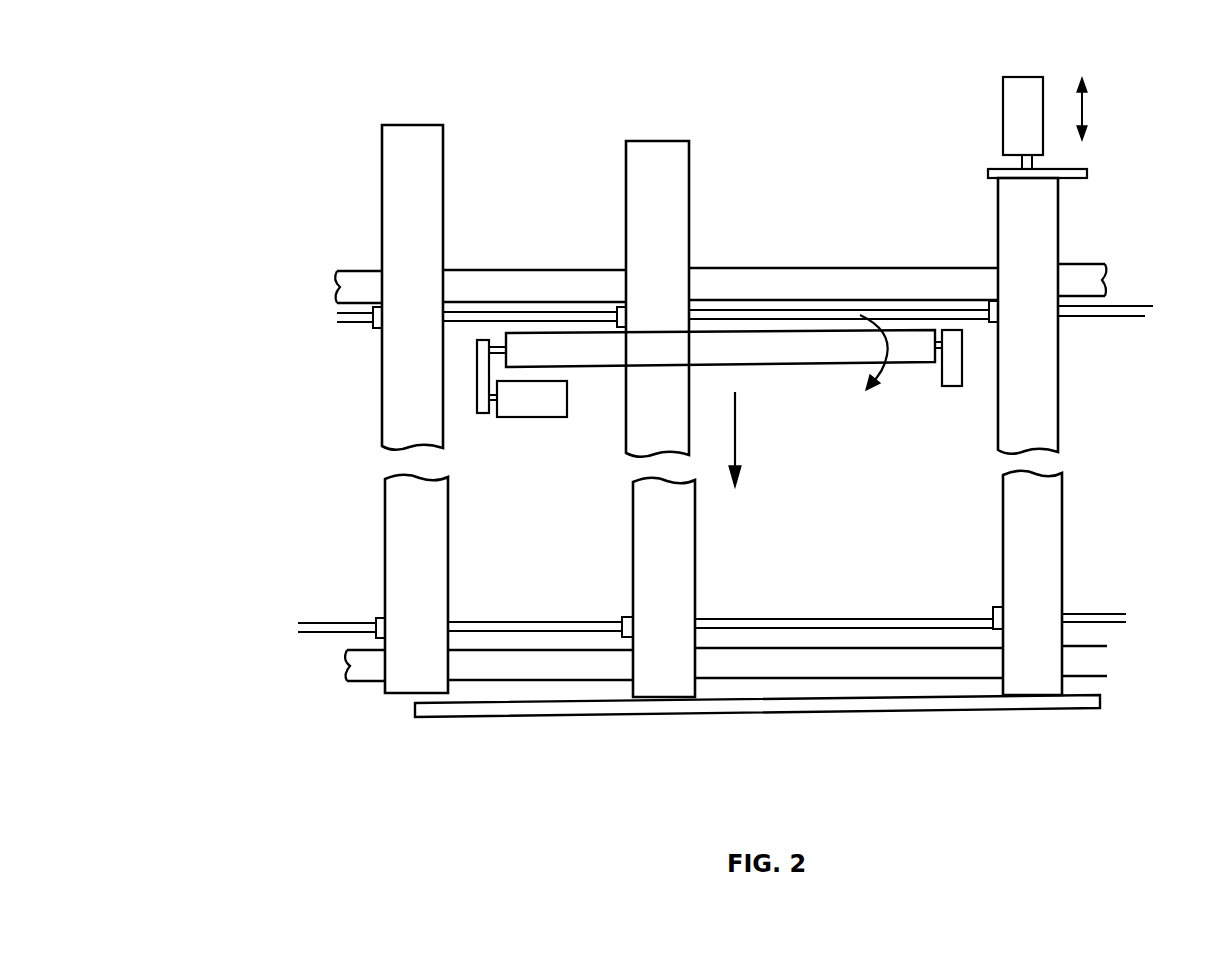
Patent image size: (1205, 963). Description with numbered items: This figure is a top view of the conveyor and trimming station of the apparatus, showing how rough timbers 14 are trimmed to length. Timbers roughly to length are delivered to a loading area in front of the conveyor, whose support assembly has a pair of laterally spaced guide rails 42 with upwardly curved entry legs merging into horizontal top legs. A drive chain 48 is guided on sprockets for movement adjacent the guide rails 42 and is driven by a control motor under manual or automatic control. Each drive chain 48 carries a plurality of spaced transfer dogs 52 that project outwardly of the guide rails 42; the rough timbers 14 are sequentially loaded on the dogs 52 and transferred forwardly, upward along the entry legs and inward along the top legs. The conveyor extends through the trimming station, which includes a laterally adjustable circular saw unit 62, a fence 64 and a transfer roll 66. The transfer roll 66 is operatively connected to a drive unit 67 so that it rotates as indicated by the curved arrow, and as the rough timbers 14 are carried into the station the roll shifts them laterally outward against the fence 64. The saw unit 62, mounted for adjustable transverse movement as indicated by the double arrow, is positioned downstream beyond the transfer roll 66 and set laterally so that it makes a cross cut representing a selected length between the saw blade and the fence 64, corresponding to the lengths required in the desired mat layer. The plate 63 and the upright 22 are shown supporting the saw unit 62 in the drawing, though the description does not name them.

The rough timber 14 is at (413, 142).
The frame upright 22 is at (1038, 208).
The guide rail 42 is at (352, 290).
The drive chain 48 is at (358, 322).
The transfer dog 52 is at (378, 617).
The circular saw unit 62 is at (1010, 105).
The mounting plate 63 is at (988, 174).
The fence 64 is at (902, 703).
The transfer roll 66 is at (787, 348).
The drive unit 67 is at (528, 403).